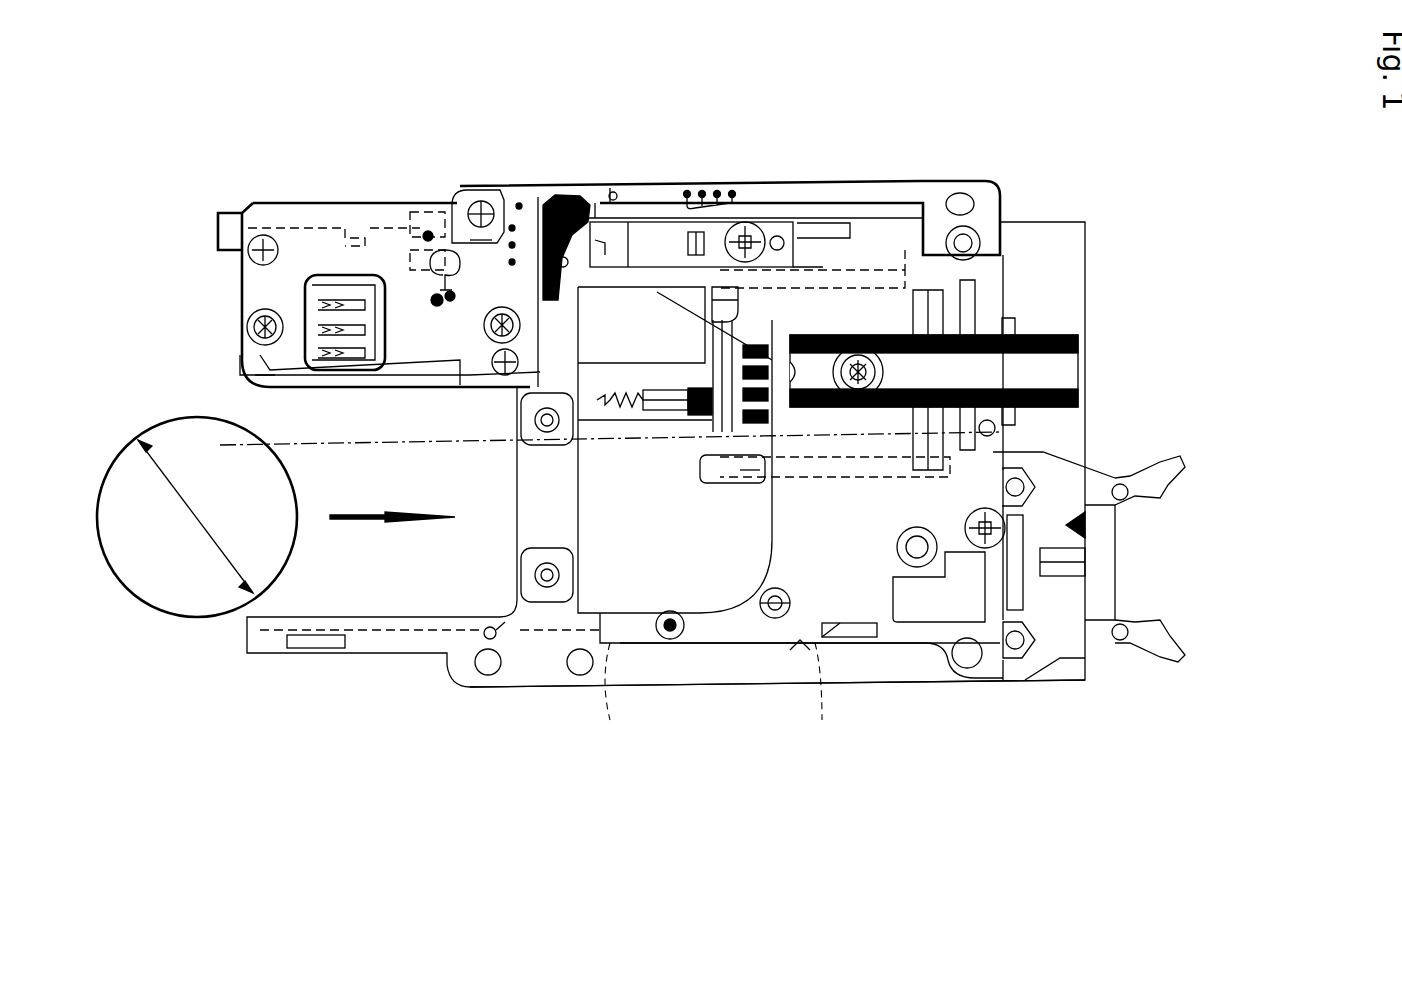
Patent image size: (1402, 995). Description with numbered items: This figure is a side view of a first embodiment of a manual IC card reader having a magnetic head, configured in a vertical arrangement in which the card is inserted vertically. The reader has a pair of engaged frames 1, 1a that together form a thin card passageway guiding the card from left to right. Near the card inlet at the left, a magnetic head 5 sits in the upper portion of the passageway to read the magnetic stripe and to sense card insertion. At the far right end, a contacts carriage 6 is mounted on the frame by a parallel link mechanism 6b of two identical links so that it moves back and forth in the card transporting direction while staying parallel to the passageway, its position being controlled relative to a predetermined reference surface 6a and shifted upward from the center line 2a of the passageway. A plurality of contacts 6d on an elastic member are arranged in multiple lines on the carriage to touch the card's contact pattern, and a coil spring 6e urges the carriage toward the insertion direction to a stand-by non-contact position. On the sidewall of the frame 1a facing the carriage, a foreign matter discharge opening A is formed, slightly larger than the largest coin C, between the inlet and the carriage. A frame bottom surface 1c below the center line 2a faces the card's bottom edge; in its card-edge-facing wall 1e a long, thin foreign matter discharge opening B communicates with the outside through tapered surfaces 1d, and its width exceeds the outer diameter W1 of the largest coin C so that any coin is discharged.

The frame 1 is at (545, 690).
The frame 1a is at (762, 632).
The frame bottom surface 1c is at (722, 650).
The tapered surfaces 1d is at (610, 720).
The card-edge-facing wall 1e is at (400, 620).
The center line 2a is at (425, 445).
The magnetic head 5 is at (330, 390).
The contacts carriage 6 is at (722, 445).
The reference surface 6a is at (822, 290).
The parallel link mechanism 6b is at (780, 230).
The contacts 6d is at (738, 315).
The coil spring 6e is at (620, 420).
The foreign matter discharge opening A is at (640, 575).
The foreign matter discharge opening B is at (795, 648).
The coin C is at (150, 568).
The outer diameter W1 is at (195, 516).